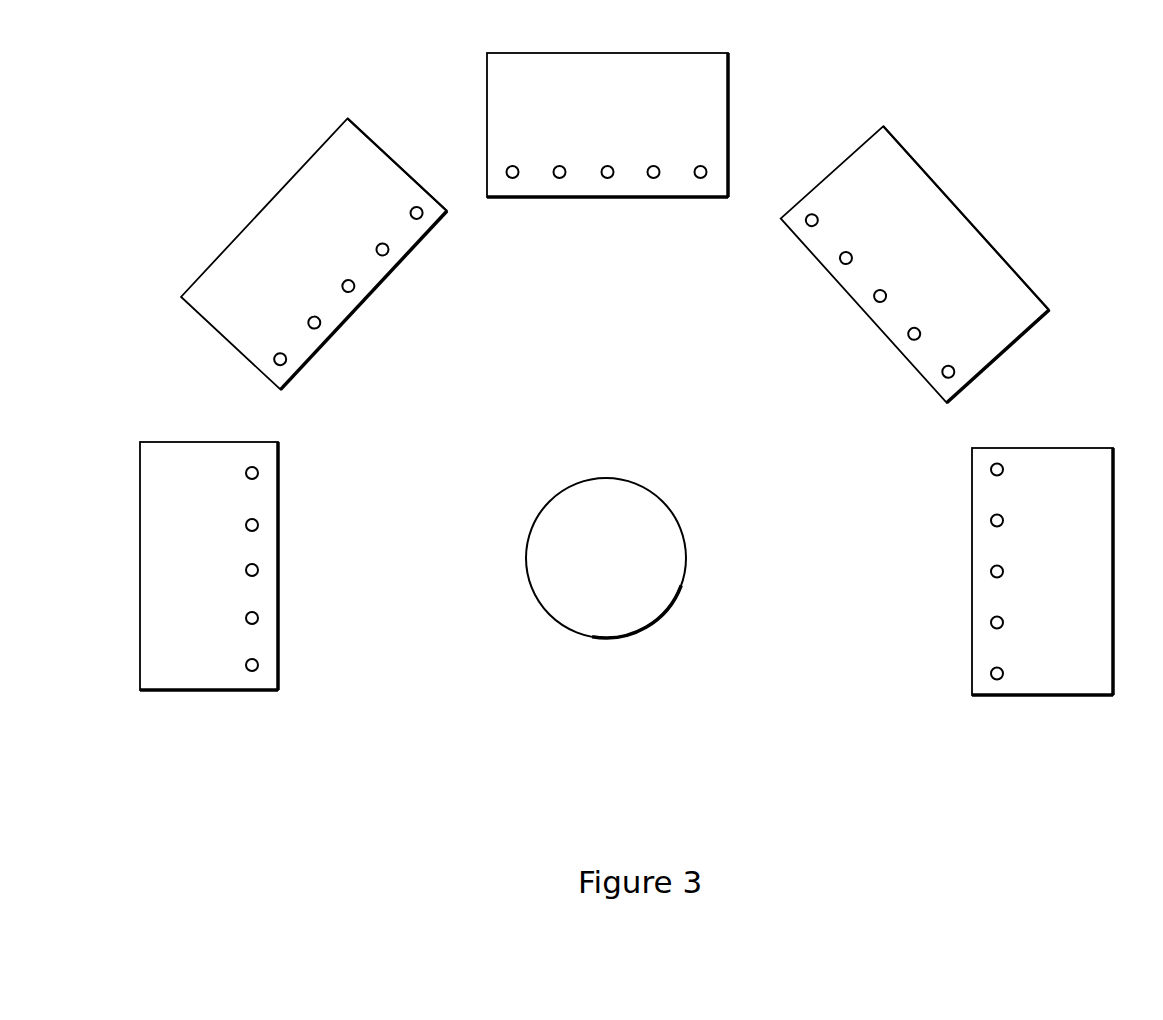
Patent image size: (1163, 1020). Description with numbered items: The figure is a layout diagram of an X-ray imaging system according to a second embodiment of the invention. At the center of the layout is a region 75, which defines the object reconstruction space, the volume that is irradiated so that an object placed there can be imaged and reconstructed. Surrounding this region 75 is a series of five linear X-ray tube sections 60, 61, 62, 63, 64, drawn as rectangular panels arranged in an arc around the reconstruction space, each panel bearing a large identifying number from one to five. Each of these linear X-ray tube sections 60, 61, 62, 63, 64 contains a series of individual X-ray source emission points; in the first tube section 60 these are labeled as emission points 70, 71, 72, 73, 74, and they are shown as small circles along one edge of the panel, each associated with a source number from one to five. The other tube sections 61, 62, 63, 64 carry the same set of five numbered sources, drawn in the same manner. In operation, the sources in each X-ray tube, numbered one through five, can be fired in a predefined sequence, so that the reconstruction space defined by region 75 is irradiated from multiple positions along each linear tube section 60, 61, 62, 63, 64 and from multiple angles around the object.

The linear X-ray tube section 60 is at (220, 551).
The linear X-ray tube section 61 is at (292, 195).
The linear X-ray tube section 62 is at (717, 96).
The linear X-ray tube section 63 is at (933, 194).
The linear X-ray tube section 64 is at (1065, 467).
The X-ray source emission point 70 is at (259, 665).
The X-ray source emission point 71 is at (259, 618).
The X-ray source emission point 72 is at (259, 570).
The X-ray source emission point 73 is at (259, 525).
The X-ray source emission point 74 is at (259, 473).
The region 75 is at (665, 575).